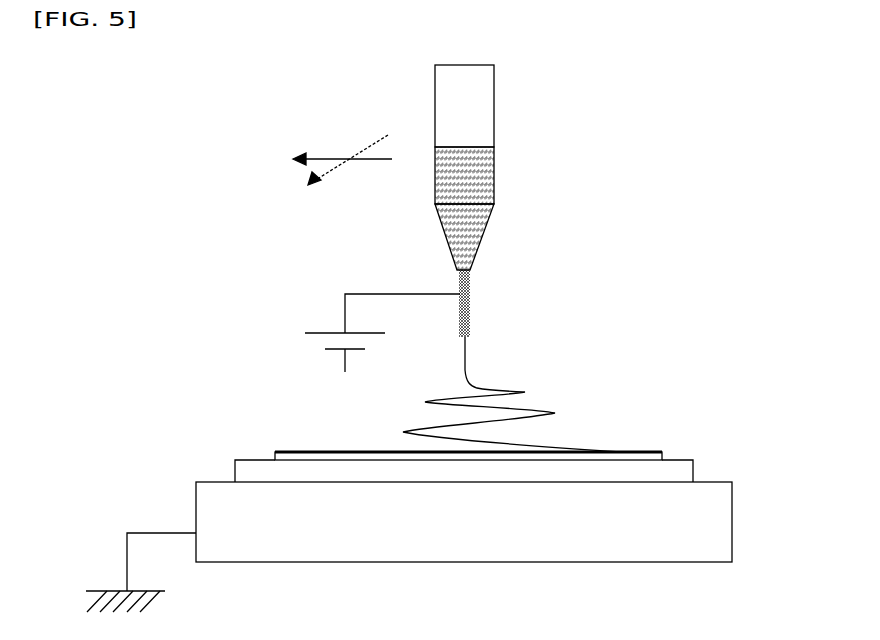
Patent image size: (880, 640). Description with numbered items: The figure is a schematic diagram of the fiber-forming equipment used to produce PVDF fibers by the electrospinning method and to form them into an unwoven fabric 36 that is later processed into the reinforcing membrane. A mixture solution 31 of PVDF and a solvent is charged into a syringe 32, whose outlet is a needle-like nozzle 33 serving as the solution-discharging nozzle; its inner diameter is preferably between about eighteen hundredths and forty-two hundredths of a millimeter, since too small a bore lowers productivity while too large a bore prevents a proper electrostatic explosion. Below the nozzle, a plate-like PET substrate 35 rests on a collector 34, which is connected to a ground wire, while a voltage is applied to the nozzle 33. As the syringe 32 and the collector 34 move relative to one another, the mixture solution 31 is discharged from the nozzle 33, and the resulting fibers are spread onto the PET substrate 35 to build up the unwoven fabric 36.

The mixture solution 31 is at (480, 176).
The syringe 32 is at (480, 100).
The needle-like nozzle 33 is at (483, 287).
The collector 34 is at (720, 515).
The PET substrate 35 is at (684, 466).
The unwoven fabric 36 is at (650, 455).